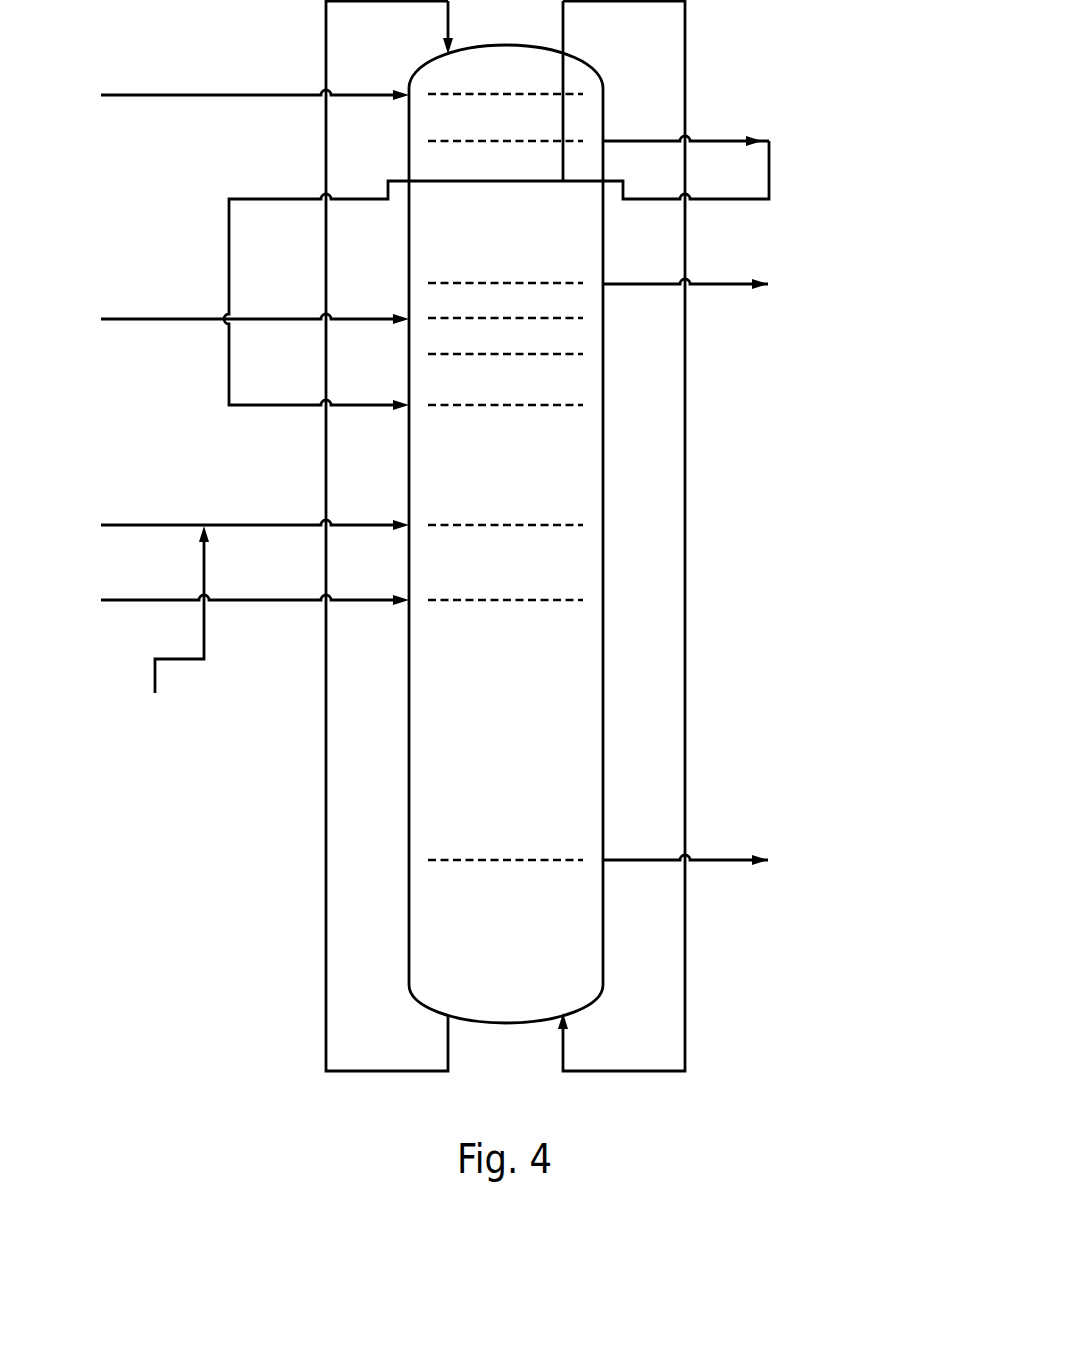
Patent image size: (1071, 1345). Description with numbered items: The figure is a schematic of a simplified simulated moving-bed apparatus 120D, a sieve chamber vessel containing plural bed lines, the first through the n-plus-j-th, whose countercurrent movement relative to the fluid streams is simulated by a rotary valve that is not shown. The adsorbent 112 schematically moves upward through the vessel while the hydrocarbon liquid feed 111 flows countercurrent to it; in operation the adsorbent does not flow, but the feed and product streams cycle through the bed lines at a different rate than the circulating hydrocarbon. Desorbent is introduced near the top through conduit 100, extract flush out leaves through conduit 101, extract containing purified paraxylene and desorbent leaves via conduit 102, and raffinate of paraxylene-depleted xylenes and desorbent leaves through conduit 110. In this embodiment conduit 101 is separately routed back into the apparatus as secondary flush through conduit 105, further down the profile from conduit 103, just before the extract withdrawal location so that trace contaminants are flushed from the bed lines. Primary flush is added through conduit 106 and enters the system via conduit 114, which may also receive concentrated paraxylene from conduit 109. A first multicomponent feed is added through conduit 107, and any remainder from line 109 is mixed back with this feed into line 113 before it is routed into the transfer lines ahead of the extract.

The desorbent conduit 100 is at (127, 95).
The extract flush out conduit 101 is at (718, 141).
The extract conduit 102 is at (718, 284).
The secondary flush conduit 103 is at (127, 319).
The secondary flush conduit 105 is at (250, 405).
The primary flush conduit 106 is at (127, 525).
The first multicomponent feed conduit 107 is at (127, 600).
The concentrated paraxylene conduit 109 is at (183, 659).
The raffinate conduit 110 is at (718, 860).
The hydrocarbon liquid feed 111 is at (325, 922).
The adsorbent 112 is at (686, 972).
The feed line 113 is at (297, 600).
The primary flush conduit 114 is at (280, 525).
The simulated moving-bed apparatus 120D is at (558, 722).